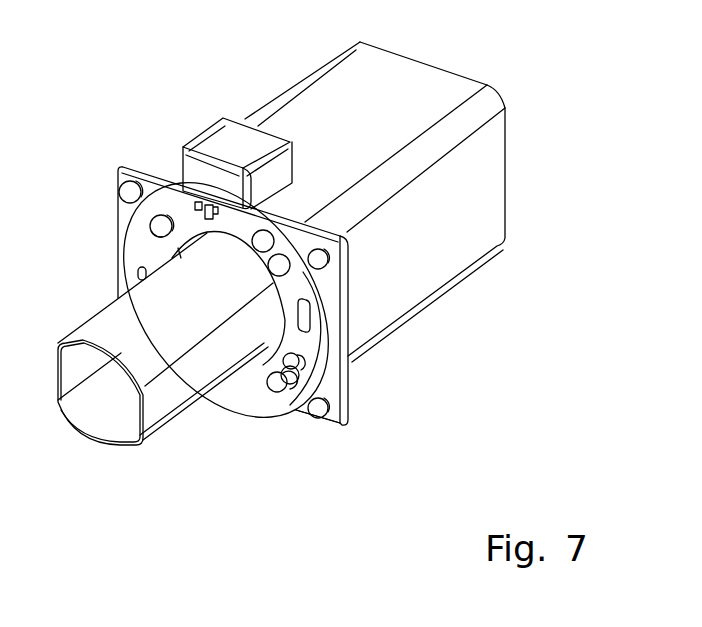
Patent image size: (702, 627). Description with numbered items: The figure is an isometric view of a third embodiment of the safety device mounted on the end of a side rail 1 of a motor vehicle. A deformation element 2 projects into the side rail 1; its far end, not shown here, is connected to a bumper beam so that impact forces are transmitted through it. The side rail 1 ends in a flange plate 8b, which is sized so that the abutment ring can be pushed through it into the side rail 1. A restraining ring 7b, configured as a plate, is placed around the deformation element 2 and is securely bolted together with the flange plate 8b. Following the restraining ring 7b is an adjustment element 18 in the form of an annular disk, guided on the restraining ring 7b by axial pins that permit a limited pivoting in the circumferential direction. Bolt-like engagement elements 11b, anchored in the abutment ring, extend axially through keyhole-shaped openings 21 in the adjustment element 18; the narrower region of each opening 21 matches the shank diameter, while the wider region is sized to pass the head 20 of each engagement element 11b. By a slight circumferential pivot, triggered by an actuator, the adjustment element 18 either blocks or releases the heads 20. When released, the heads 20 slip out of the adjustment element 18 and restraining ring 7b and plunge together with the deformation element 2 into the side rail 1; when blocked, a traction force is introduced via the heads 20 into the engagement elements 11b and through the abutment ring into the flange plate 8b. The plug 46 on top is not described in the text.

The side rail 1 is at (495, 198).
The deformation element 2 is at (93, 425).
The plug connector 46 is at (236, 130).
The flange plate 8b is at (350, 380).
The restraining ring 7b is at (337, 420).
The adjustment element 18 is at (220, 385).
The head 20 is at (276, 383).
The engagement element 11b is at (297, 380).
The opening 21 is at (300, 362).